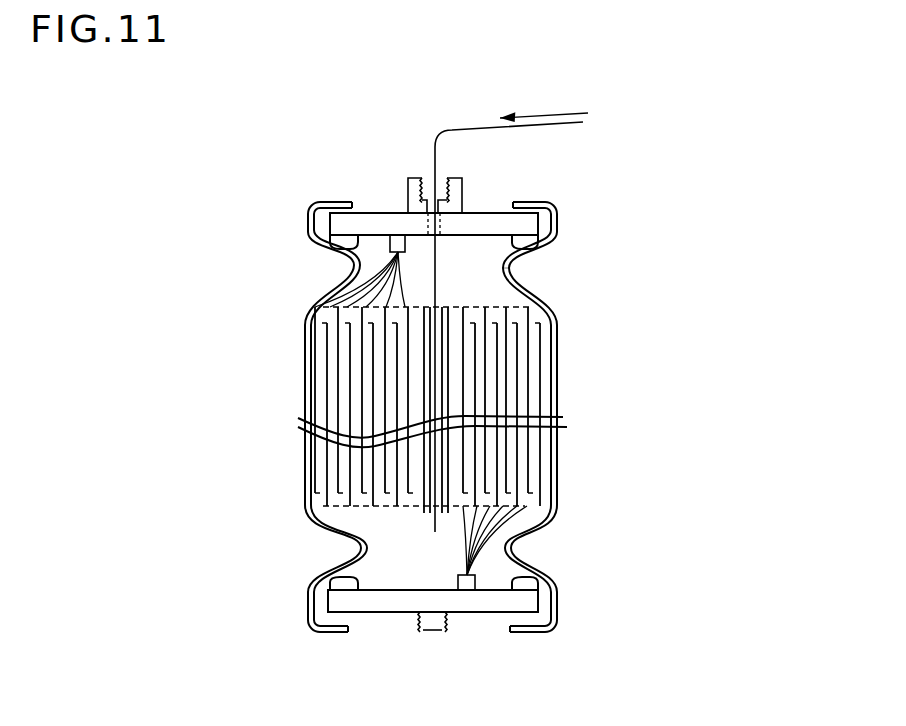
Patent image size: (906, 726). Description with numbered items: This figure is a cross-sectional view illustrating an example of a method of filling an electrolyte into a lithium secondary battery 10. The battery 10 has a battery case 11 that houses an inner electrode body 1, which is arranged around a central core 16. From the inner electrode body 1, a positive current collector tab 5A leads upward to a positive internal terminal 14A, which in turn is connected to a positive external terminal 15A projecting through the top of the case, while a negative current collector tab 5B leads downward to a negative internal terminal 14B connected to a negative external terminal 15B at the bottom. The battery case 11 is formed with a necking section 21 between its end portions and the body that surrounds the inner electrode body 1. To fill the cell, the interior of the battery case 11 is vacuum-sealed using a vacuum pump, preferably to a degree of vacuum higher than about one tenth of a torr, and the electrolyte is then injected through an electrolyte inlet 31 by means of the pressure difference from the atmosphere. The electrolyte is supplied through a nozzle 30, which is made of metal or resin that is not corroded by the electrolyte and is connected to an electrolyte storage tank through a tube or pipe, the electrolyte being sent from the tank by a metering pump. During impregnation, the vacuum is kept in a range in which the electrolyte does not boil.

The inner electrode body 1 is at (525, 357).
The positive current collector tab 5A is at (367, 271).
The negative current collector tab 5B is at (503, 537).
The battery 10 is at (400, 138).
The battery case 11 is at (307, 366).
The positive internal terminal 14A is at (405, 235).
The negative internal terminal 14B is at (475, 580).
The positive external terminal 15A is at (408, 178).
The negative external terminal 15B is at (447, 627).
The core 16 is at (445, 388).
The necking section 21 is at (540, 258).
The nozzle 30 is at (469, 128).
The electrolyte inlet 31 is at (507, 272).